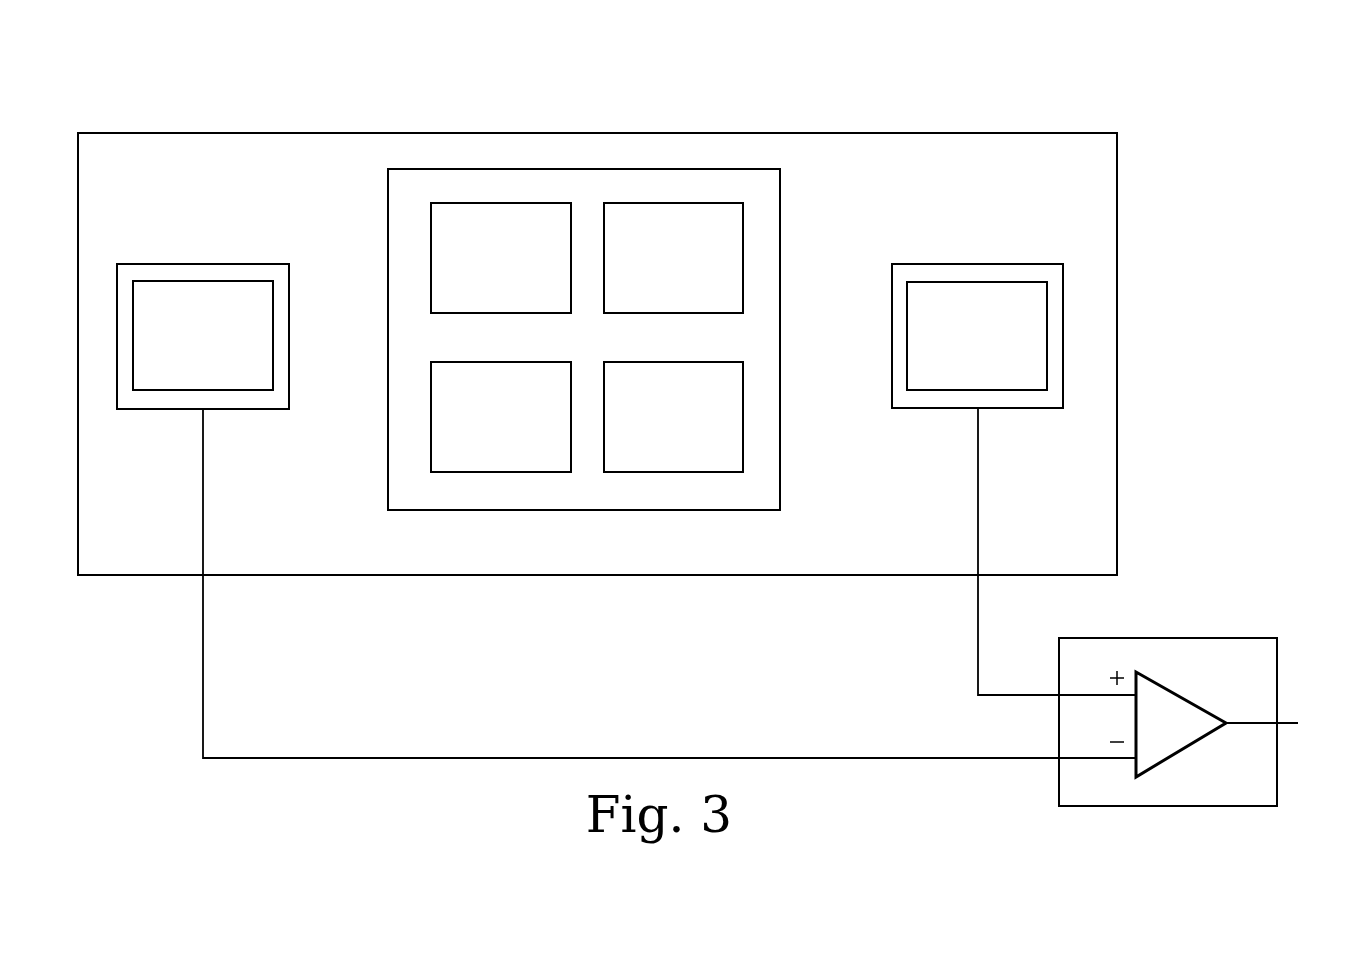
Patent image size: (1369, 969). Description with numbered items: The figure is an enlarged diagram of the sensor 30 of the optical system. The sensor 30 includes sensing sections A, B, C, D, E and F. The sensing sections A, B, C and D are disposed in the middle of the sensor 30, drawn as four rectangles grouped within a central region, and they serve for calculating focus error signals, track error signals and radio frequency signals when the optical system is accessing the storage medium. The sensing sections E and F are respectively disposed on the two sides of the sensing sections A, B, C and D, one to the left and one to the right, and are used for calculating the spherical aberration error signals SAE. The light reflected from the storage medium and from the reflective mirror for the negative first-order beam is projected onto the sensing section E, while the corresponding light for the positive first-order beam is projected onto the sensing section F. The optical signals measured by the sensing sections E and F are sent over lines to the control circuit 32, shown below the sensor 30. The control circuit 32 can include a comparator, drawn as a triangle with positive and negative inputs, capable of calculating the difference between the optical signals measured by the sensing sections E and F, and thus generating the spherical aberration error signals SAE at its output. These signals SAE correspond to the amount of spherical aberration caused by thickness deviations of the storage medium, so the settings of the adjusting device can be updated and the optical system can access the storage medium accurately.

The sensor 30 is at (597, 300).
The control circuit 32 is at (1214, 670).
The sensing section A is at (673, 258).
The sensing section B is at (501, 258).
The sensing section C is at (501, 417).
The sensing section D is at (673, 417).
The sensing section E is at (203, 336).
The sensing section F is at (977, 336).
The spherical aberration error signals SAE is at (1297, 722).